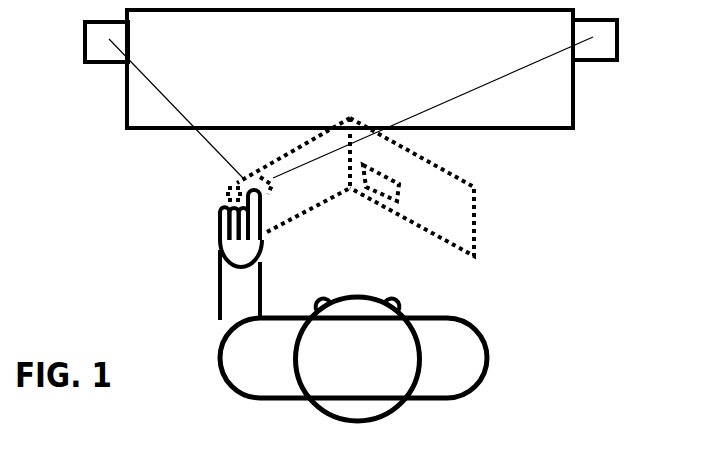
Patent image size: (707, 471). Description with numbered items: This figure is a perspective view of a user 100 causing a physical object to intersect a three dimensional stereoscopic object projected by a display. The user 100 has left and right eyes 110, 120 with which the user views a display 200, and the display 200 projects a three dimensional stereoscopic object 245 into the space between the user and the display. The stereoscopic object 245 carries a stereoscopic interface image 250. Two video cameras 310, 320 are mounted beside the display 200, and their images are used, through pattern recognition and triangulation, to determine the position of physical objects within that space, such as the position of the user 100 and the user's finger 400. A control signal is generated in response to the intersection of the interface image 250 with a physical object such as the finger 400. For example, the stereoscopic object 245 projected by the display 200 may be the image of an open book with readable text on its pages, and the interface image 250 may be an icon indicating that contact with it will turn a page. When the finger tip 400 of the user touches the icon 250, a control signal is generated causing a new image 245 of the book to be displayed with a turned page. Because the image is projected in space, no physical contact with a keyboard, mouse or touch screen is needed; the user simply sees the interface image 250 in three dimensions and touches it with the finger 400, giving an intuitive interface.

The user 100 is at (383, 372).
The left eye 110 is at (317, 300).
The right eye 120 is at (400, 300).
The display 200 is at (365, 80).
The three dimensional stereoscopic object 245 is at (478, 217).
The stereoscopic interface image 250 is at (263, 182).
The video camera 310 is at (80, 50).
The video camera 320 is at (620, 34).
The finger 400 is at (227, 188).